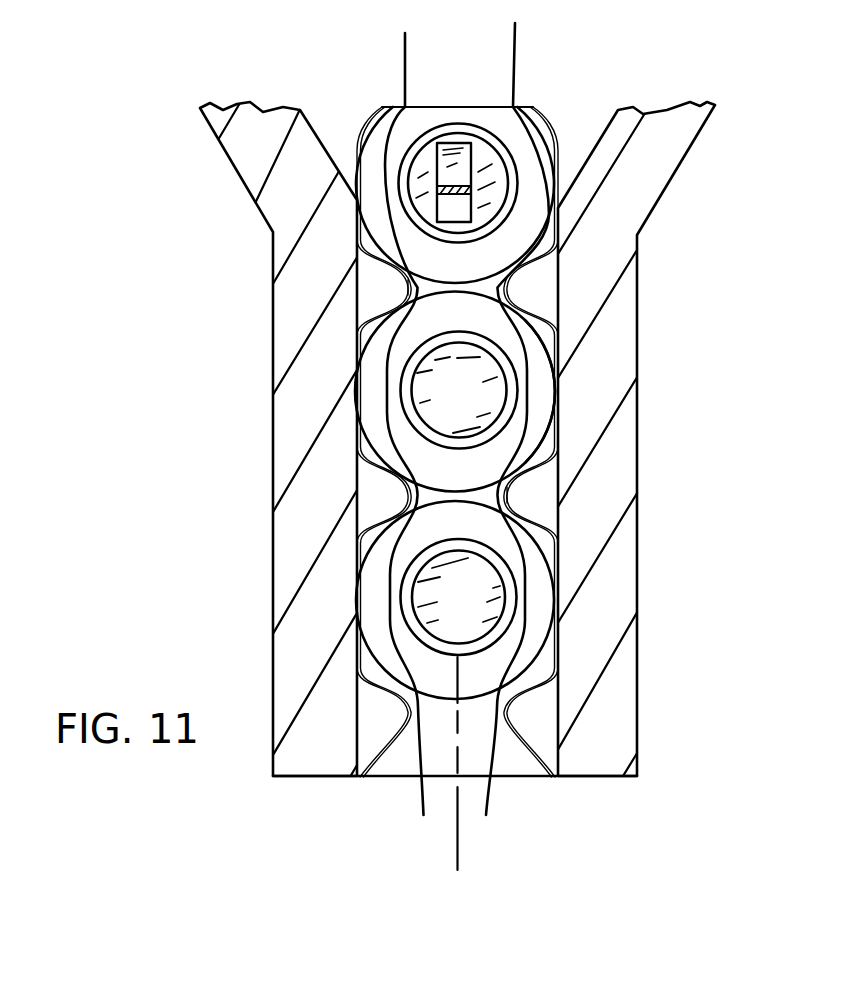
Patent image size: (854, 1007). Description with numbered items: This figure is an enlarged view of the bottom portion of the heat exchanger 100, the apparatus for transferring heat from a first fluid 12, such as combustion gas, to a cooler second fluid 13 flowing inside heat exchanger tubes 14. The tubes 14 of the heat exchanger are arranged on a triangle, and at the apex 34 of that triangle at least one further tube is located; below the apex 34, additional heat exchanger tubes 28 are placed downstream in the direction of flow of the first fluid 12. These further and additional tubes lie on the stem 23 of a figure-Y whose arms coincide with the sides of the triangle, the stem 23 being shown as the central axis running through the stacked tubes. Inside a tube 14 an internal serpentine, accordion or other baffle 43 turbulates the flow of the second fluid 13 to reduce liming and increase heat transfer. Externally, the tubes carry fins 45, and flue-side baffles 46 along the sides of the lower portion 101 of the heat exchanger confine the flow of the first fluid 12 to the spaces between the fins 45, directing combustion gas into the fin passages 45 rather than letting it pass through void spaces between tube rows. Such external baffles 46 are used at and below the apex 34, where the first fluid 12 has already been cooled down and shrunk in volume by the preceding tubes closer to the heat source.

The first fluid 12 is at (515, 30).
The second fluid 13 is at (478, 407).
The heat exchanger tube 14 is at (518, 392).
The stem 23 is at (455, 836).
The additional heat exchanger tubes 28 is at (440, 524).
The apex 34 is at (380, 92).
The baffle 43 is at (462, 168).
The fins 45 is at (538, 408).
The baffles 46 is at (513, 290).
The heat exchanger 100 is at (268, 405).
The lower portion 101 is at (620, 473).